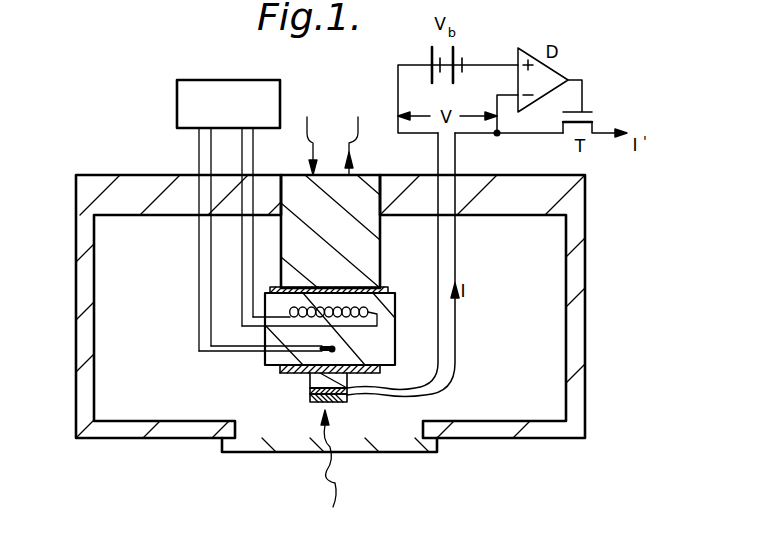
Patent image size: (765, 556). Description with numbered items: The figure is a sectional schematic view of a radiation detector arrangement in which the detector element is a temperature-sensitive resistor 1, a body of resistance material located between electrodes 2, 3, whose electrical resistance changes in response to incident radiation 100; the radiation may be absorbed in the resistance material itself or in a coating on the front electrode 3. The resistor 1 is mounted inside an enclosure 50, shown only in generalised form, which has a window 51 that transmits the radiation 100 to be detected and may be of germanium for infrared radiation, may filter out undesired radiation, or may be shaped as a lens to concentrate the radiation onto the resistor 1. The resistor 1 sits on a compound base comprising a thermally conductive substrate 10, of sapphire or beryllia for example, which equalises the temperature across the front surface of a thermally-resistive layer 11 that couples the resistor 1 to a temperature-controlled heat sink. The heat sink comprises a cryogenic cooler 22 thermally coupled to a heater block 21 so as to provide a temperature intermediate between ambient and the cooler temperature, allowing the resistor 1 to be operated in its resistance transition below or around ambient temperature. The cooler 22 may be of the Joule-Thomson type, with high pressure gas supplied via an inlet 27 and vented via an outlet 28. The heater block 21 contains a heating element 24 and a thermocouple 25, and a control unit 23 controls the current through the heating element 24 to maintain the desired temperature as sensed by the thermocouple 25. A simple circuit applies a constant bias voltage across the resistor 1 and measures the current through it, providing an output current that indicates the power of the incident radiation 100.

The temperature-sensitive resistor 1 is at (315, 399).
The electrode 2 is at (312, 390).
The front electrode 3 is at (333, 400).
The substrate 10 is at (310, 380).
The thermally-resistive layer 11 is at (280, 368).
The heater block 21 is at (385, 338).
The cooler 22 is at (370, 247).
The control unit 23 is at (228, 215).
The heating element 24 is at (372, 306).
The thermocouple 25 is at (334, 350).
The inlet 27 is at (313, 134).
The outlet 28 is at (356, 134).
The enclosure 50 is at (127, 428).
The window 51 is at (283, 446).
The radiation 100 is at (336, 482).